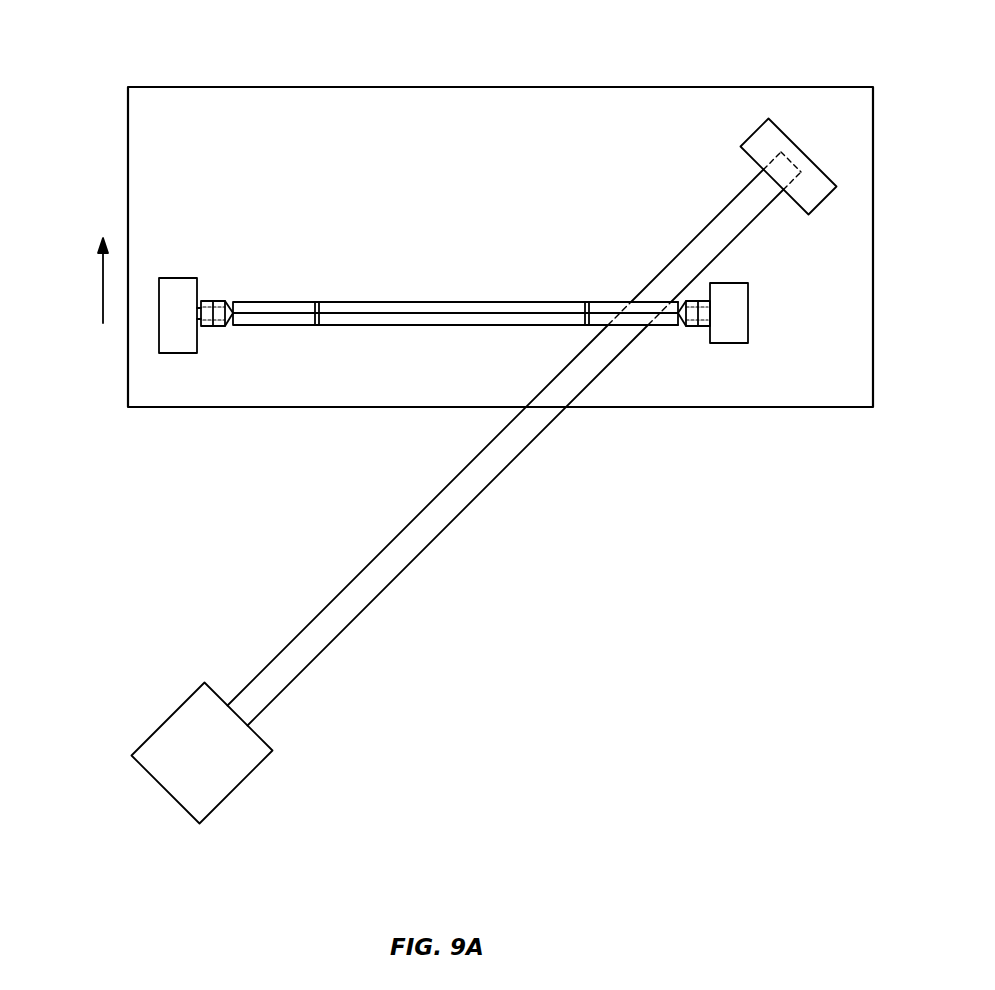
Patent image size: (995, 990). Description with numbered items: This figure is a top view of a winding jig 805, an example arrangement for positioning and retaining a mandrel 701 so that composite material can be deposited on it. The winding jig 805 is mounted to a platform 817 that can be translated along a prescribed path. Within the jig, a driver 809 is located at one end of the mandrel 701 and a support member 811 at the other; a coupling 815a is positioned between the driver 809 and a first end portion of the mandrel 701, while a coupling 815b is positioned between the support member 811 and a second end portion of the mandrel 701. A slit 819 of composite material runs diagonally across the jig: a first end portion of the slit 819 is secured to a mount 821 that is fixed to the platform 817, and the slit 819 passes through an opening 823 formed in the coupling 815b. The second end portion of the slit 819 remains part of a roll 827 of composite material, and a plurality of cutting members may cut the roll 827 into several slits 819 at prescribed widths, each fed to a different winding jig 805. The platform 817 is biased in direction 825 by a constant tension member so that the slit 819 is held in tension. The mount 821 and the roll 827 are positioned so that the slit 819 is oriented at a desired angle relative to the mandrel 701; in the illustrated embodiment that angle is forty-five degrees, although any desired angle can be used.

The platform 817 is at (288, 87).
The winding jig 805 is at (172, 227).
The direction 825 is at (102, 300).
The driver 809 is at (177, 353).
The coupling 815a is at (285, 325).
The mandrel 701 is at (420, 325).
The opening 823 is at (628, 325).
The coupling 815b is at (668, 325).
The support member 811 is at (748, 323).
The slit 819 is at (495, 483).
The mount 821 is at (752, 135).
The roll 827 is at (255, 768).